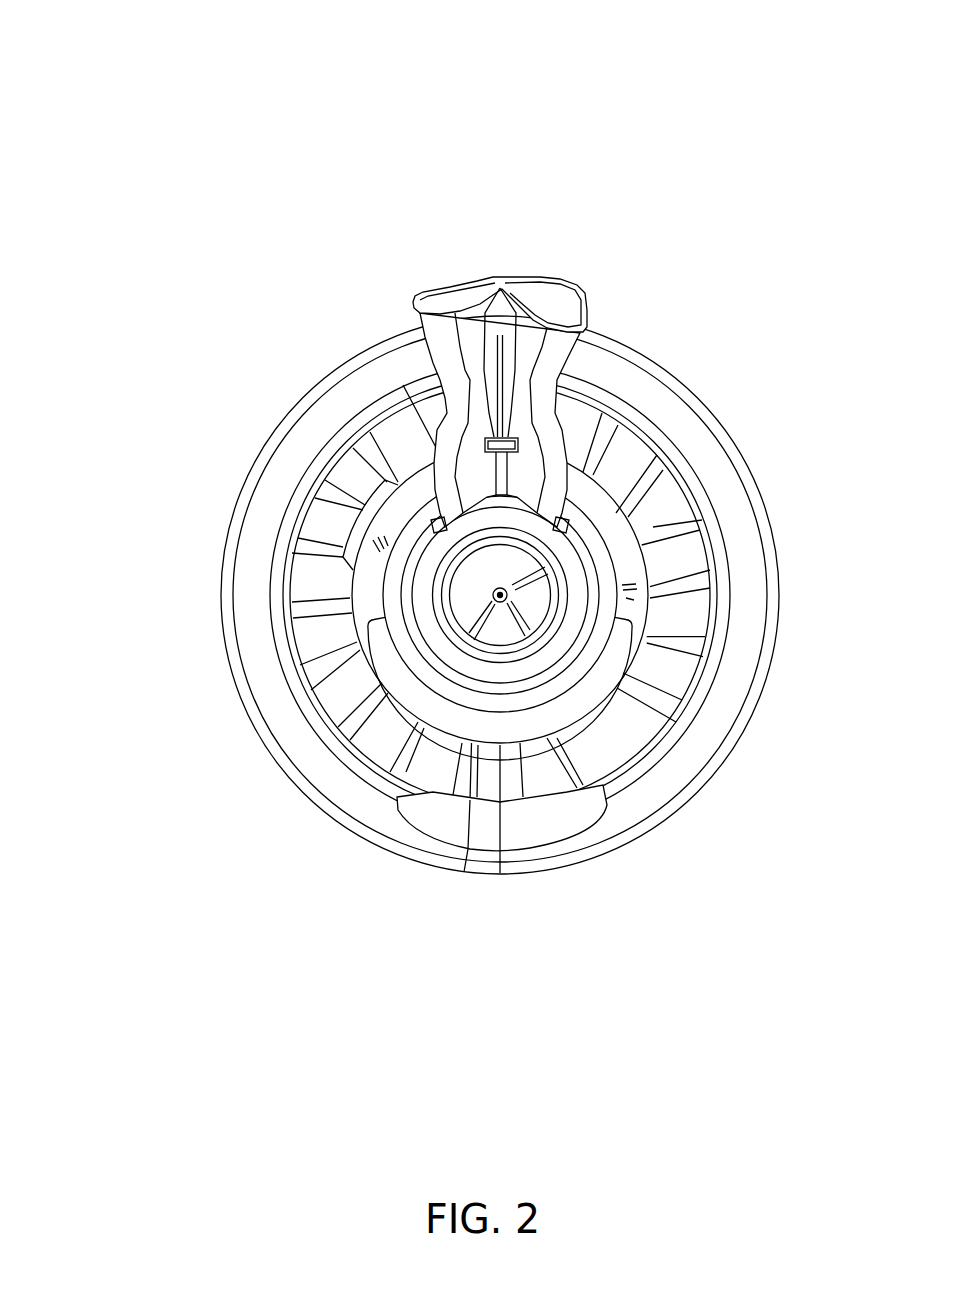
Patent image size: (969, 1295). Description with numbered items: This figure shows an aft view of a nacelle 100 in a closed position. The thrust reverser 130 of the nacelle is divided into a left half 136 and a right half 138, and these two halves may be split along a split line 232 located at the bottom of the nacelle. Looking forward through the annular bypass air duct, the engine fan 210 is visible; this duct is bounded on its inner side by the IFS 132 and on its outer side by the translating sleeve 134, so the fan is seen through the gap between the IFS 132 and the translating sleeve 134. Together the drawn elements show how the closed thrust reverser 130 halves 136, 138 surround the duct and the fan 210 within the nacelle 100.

The nacelle 100 is at (473, 522).
The thrust reverser 130 is at (394, 595).
The IFS 132 is at (554, 525).
The translating sleeve 134 is at (580, 557).
The left half 136 is at (437, 656).
The right half 138 is at (537, 670).
The engine fan 210 is at (557, 595).
The split line 232 is at (506, 865).